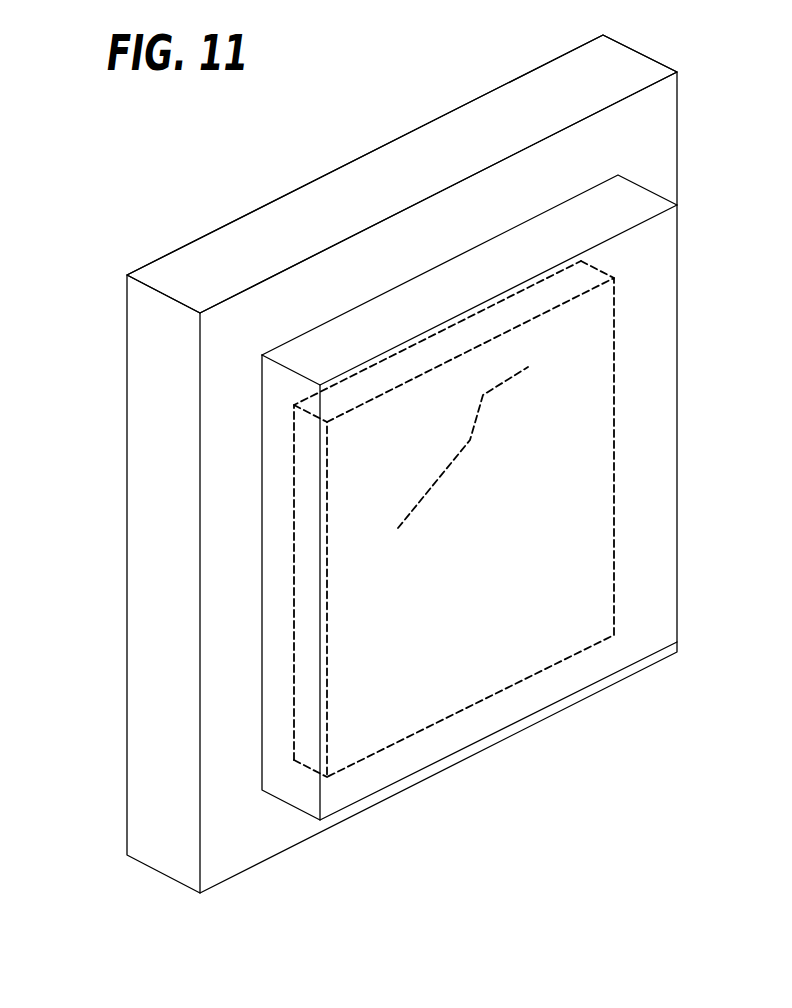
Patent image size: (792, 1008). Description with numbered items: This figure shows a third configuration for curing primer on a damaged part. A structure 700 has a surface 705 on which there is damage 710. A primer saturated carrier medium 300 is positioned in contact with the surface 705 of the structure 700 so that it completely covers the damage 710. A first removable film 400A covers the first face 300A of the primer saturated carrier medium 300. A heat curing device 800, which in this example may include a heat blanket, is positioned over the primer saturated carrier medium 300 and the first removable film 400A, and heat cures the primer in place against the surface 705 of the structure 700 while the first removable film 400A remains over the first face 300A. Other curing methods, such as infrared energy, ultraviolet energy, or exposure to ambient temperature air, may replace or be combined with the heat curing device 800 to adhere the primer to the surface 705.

The structure 700 is at (449, 464).
The surface 705 is at (252, 285).
The damage 710 is at (468, 440).
The heat curing device 800 is at (588, 212).
The primer saturated carrier medium 300 is at (526, 502).
The first face 300A is at (581, 261).
The first removable film 400A is at (542, 438).